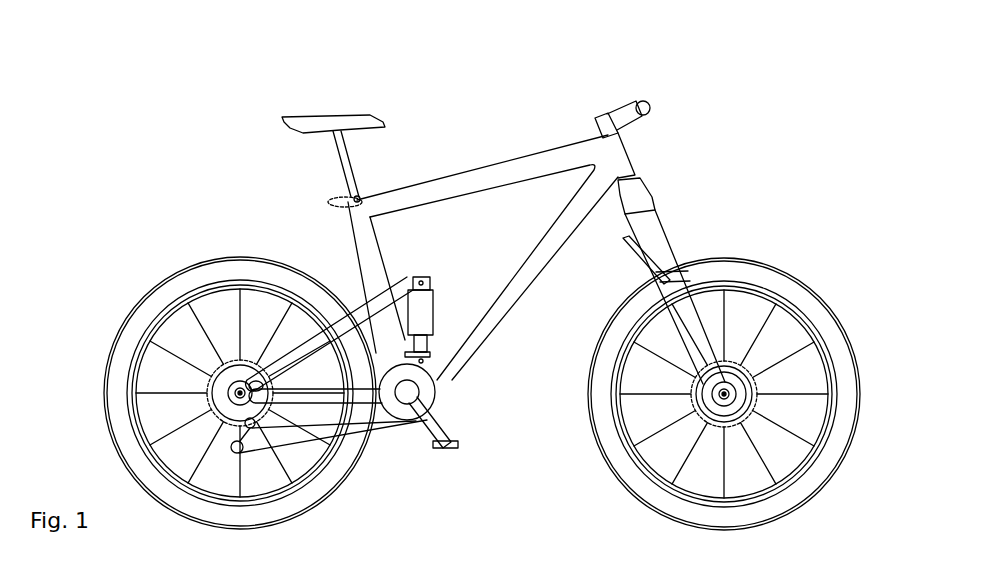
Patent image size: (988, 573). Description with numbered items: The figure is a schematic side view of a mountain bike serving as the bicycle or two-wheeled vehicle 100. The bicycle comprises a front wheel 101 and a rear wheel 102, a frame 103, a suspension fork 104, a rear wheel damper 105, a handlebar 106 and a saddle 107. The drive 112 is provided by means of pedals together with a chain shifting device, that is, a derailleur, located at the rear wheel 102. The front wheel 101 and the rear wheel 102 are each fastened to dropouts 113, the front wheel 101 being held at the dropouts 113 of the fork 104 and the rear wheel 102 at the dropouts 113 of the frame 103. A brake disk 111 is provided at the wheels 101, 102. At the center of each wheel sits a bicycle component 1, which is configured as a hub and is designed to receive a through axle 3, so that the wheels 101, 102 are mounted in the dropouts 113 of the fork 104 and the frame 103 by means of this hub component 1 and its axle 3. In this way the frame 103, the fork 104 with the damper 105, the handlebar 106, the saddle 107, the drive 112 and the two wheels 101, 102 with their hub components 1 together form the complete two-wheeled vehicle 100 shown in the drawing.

The two-wheeled vehicle 100 is at (186, 145).
The front wheel 101 is at (813, 255).
The rear wheel 102 is at (155, 263).
The frame 103 is at (510, 172).
The suspension fork 104 is at (683, 261).
The rear wheel damper 105 is at (428, 303).
The handlebar 106 is at (645, 100).
The saddle 107 is at (339, 115).
The brake disk 111 is at (753, 405).
The drive 112 is at (436, 468).
The dropouts 113 is at (230, 383).
The bicycle component 1 is at (196, 382).
The wheel axle 3 is at (236, 394).